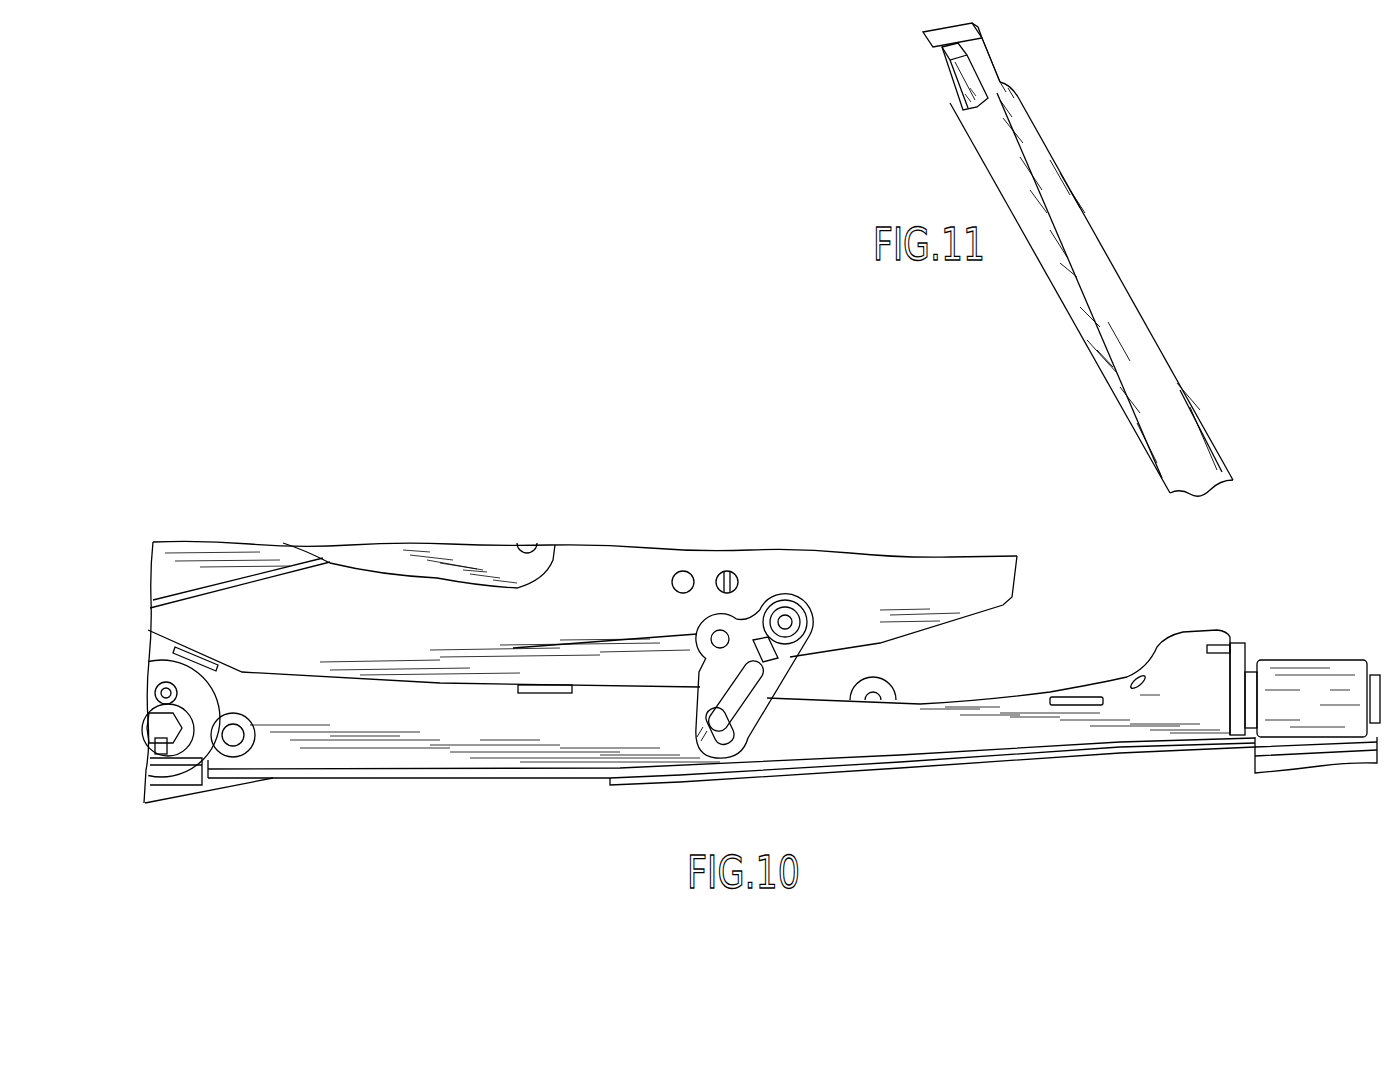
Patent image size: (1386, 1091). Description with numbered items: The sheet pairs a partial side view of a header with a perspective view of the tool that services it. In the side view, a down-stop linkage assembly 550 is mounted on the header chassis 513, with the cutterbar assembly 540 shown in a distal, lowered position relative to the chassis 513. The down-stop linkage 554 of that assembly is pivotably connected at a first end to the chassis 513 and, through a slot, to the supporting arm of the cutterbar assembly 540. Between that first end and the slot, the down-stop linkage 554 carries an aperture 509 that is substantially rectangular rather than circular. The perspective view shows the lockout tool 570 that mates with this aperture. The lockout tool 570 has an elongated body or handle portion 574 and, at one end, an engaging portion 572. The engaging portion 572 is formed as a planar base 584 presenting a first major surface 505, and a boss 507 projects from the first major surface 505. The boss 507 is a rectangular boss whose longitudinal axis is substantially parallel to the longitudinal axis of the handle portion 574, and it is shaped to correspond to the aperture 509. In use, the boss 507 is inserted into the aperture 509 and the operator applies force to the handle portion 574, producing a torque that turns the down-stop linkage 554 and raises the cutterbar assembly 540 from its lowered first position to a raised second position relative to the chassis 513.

In FIG. 11, the lockout tool 570 is at (1044, 258).
In FIG. 11, the elongated body or handle portion 574 is at (1130, 300).
In FIG. 11, the engaging portion 572 is at (1025, 100).
In FIG. 11, the planar base 584 is at (991, 63).
In FIG. 11, the first major surface 505 is at (930, 48).
In FIG. 11, the boss 507 is at (947, 80).
In FIG. 10, the chassis 513 is at (658, 536).
In FIG. 10, the cutterbar assembly 540 is at (559, 787).
In FIG. 10, the down-stop linkage assembly 550 is at (819, 708).
In FIG. 10, the down-stop linkage 554 is at (786, 678).
In FIG. 10, the aperture 509 is at (790, 657).